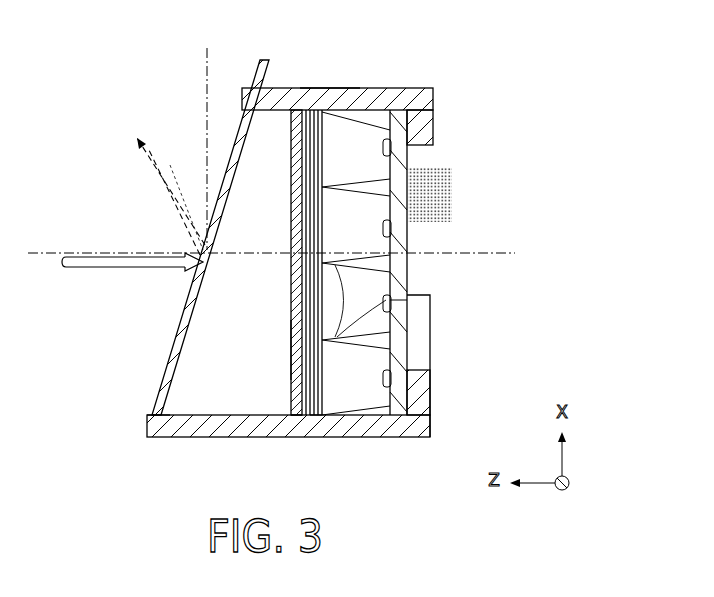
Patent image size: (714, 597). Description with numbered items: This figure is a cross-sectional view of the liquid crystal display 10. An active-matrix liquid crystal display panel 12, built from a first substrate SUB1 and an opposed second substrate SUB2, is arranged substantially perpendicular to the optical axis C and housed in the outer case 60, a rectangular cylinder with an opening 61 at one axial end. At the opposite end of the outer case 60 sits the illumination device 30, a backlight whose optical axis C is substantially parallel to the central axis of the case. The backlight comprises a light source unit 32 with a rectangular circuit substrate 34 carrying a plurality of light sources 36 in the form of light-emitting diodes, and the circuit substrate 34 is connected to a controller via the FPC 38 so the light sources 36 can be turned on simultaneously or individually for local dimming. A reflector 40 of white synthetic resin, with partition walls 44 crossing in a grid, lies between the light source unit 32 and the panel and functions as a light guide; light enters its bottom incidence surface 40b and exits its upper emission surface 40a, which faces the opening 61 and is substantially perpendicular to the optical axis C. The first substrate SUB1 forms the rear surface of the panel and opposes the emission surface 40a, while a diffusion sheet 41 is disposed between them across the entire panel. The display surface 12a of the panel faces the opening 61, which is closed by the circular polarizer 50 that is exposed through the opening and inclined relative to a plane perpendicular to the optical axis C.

The liquid crystal display 10 is at (424, 72).
The liquid crystal display panel 12 is at (283, 199).
The display surface 12a is at (290, 350).
The illumination device 30 is at (347, 124).
The light source unit 32 is at (401, 265).
The circuit substrate 34 is at (408, 327).
The light sources 36 is at (395, 150).
The FPC 38 is at (452, 186).
The reflector 40 is at (376, 356).
The emission surface 40a is at (328, 164).
The incidence surface 40b is at (409, 285).
The diffusion sheet 41 is at (331, 88).
The partition walls 44 is at (409, 318).
The circular polarizer 50 is at (184, 322).
The outer case 60 is at (225, 437).
The opening 61 is at (152, 415).
The first substrate SUB1 is at (313, 437).
The second substrate SUB2 is at (295, 437).
The optical axis C is at (46, 254).